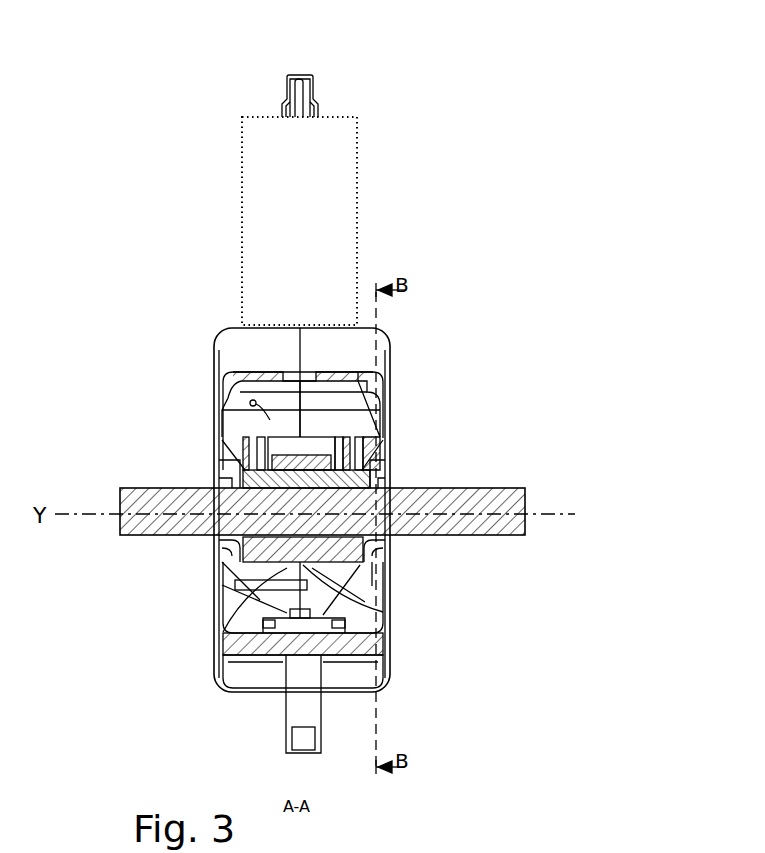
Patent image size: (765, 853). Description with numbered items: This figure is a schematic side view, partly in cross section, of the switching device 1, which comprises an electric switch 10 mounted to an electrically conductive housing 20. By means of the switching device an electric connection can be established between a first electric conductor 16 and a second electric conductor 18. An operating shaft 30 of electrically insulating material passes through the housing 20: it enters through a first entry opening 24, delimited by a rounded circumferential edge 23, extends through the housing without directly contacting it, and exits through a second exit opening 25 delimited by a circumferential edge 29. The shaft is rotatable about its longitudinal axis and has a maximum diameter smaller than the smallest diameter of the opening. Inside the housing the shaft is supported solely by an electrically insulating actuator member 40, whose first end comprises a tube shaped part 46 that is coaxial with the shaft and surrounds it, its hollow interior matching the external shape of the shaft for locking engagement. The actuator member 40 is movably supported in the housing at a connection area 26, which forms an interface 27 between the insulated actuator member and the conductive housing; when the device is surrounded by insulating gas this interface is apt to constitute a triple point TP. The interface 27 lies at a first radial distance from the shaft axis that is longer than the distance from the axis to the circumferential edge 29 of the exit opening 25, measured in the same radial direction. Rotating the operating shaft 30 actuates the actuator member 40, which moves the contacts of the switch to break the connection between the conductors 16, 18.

The switching device 1 is at (485, 241).
The electric switch 10 is at (384, 213).
The first electric conductor 16 is at (305, 73).
The second electric conductor 18 is at (315, 704).
The housing 20 is at (397, 384).
The circumferential edge 23 is at (388, 486).
The opening 24 is at (386, 488).
The second exit opening 25 is at (218, 486).
The connection area 26 is at (383, 448).
The interface 27 is at (393, 432).
The circumferential edge 29 is at (218, 486).
The operating shaft 30 is at (508, 488).
The actuator member 40 is at (392, 562).
The tube shaped part 46 is at (388, 615).
The triple point TP is at (386, 478).